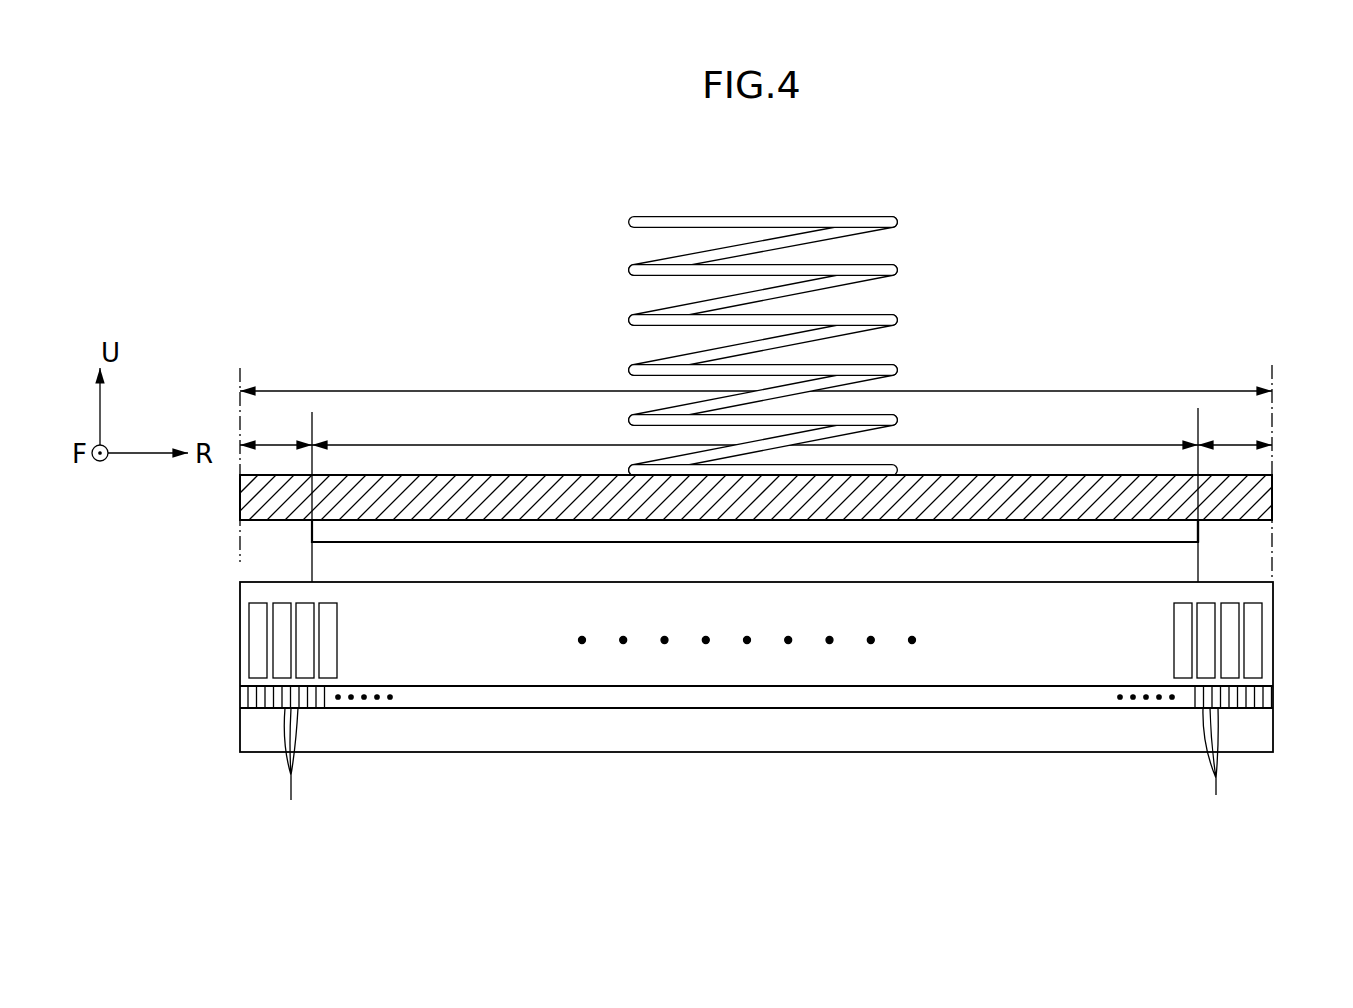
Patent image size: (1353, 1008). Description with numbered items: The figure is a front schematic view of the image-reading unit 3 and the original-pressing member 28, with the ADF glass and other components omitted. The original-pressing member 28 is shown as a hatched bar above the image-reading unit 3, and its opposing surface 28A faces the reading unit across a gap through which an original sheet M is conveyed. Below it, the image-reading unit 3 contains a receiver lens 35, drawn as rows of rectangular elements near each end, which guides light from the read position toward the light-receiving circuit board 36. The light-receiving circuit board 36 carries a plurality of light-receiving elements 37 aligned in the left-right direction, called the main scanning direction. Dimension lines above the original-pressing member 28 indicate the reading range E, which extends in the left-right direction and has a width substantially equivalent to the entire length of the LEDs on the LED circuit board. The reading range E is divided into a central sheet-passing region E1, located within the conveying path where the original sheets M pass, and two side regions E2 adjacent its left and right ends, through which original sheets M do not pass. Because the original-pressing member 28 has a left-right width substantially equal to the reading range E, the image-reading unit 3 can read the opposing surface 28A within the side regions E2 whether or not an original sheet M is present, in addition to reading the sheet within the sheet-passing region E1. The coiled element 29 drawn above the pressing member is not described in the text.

The coil spring 29 is at (898, 266).
The original-pressing member 28 is at (1262, 493).
The opposing surface 28A is at (1105, 519).
The original sheet M is at (1192, 529).
The image-reading unit 3 is at (1273, 649).
The receiver lens 35 is at (1252, 612).
The light-receiving circuit board 36 is at (1260, 726).
The light-receiving elements 37 is at (757, 771).
The reading range E is at (495, 391).
The sheet-passing region E1 is at (935, 445).
The side regions E2 is at (277, 445).